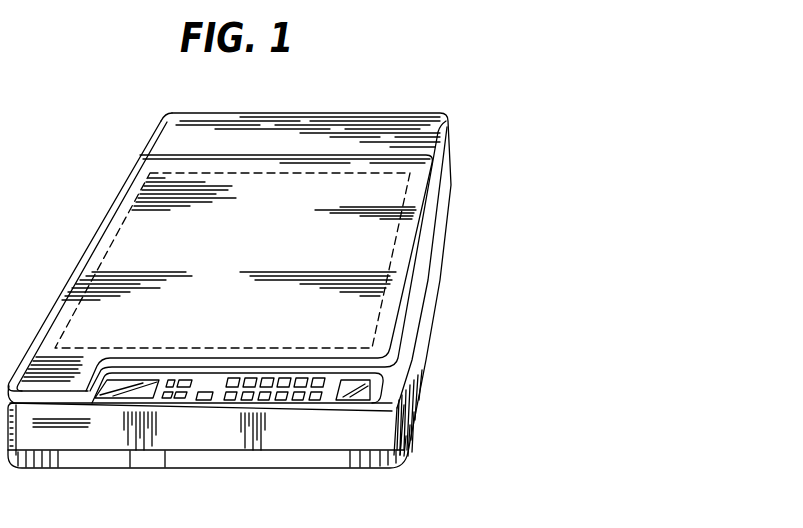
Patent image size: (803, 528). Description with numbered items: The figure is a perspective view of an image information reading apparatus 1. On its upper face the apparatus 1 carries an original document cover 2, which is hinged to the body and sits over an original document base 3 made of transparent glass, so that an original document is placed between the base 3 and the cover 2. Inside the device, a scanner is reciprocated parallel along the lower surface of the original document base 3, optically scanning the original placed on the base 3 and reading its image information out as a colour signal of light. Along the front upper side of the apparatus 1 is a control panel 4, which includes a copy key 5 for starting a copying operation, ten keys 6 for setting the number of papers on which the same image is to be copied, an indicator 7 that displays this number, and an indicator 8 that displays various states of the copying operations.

The image information reading apparatus 1 is at (436, 305).
The original document cover 2 is at (122, 217).
The original document base 3 is at (330, 172).
The control panel 4 is at (372, 386).
The copy key 5 is at (352, 396).
The ten keys 6 is at (265, 377).
The indicator 7 is at (205, 401).
The indicator 8 is at (130, 400).